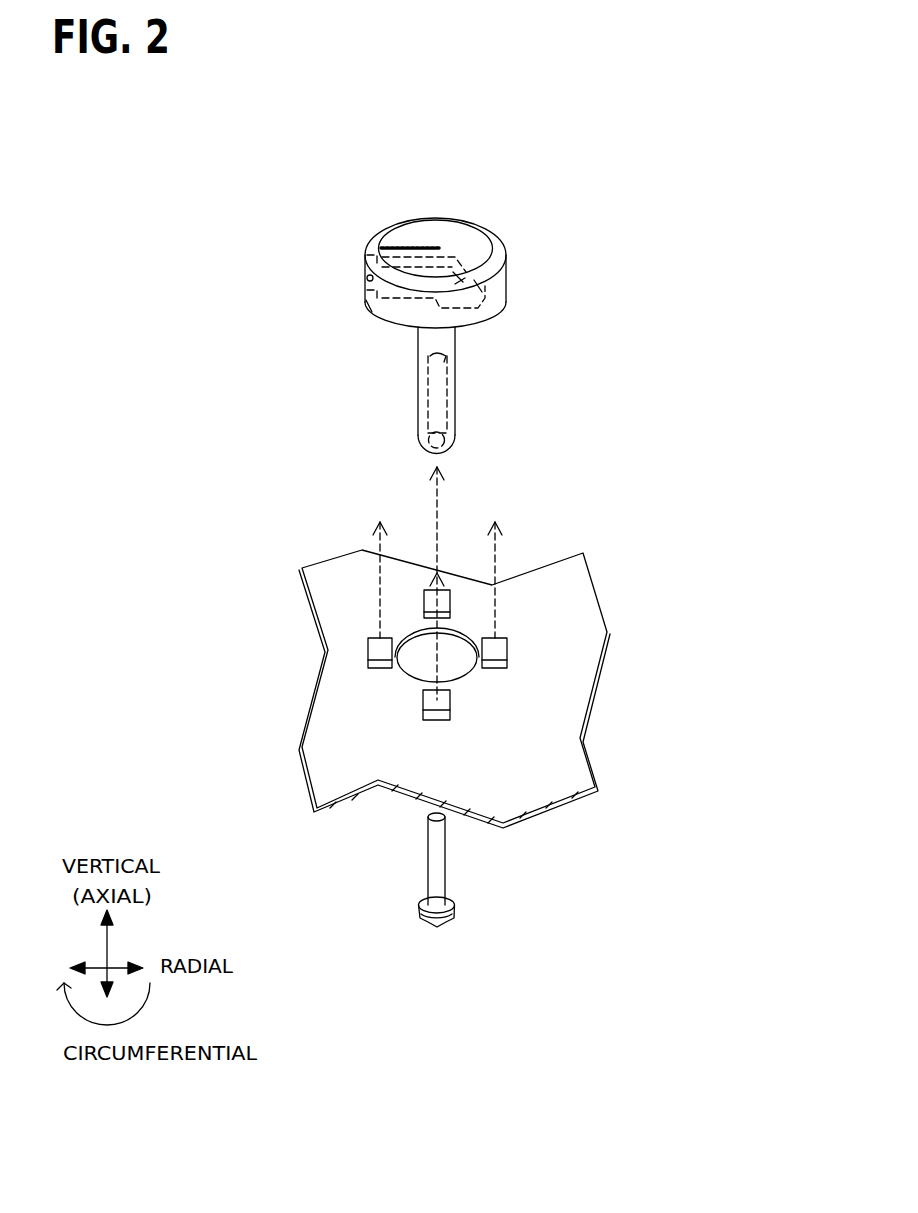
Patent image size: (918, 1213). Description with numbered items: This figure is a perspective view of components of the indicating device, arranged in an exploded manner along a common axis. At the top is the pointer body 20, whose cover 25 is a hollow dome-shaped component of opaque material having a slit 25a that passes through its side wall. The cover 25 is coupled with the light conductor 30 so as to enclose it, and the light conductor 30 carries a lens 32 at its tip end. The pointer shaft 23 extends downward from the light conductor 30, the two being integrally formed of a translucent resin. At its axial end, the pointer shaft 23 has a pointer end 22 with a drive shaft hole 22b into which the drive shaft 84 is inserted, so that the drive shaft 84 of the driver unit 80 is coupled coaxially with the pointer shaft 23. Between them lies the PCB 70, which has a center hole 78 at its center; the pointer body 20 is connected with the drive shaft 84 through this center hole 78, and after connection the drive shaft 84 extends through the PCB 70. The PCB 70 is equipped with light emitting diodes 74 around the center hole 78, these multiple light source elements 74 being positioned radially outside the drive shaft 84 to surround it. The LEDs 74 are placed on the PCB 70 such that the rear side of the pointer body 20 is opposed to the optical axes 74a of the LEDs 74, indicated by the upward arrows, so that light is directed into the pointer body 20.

The pointer body 20 is at (575, 338).
The pointer end 22 is at (434, 442).
The drive shaft hole 22b is at (457, 367).
The pointer shaft 23 is at (457, 317).
The cover 25 is at (471, 237).
The slit 25a is at (371, 306).
The light conductor 30 is at (490, 290).
The lens 32 is at (364, 277).
The PCB 70 is at (645, 668).
The light emitting diodes 74 is at (452, 602).
The optical axes 74a is at (373, 540).
The center hole 78 is at (473, 634).
The driver unit 80 is at (642, 887).
The drive shaft 84 is at (447, 862).